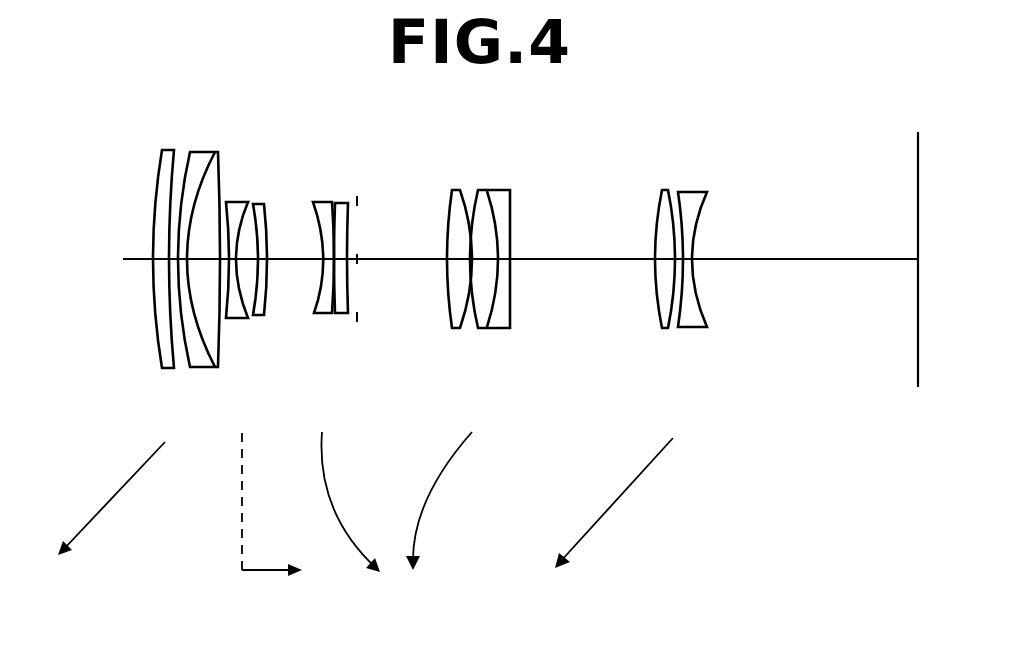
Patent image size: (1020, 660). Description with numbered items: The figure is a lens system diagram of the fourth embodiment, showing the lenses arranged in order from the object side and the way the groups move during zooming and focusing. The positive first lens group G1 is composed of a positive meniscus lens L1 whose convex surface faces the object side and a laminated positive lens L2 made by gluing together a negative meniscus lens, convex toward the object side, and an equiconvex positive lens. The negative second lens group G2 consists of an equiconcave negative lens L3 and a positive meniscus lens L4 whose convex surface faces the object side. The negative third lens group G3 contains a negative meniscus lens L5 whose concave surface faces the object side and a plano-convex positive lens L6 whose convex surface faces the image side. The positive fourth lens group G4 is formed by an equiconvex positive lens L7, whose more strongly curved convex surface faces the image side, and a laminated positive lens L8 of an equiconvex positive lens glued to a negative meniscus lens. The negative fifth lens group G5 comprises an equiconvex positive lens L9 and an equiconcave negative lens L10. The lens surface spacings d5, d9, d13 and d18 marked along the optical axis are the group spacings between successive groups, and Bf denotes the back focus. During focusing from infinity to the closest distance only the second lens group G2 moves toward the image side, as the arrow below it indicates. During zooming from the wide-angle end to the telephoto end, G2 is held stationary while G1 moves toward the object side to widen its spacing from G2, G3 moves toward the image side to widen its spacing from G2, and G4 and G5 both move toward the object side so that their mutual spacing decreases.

The positive meniscus lens L1 is at (170, 148).
The laminated positive lens L2 is at (217, 152).
The equiconcave negative lens L3 is at (238, 203).
The positive meniscus lens L4 is at (265, 205).
The negative meniscus lens L5 is at (322, 207).
The plano-convex positive lens L6 is at (345, 205).
The equiconvex positive lens L7 is at (457, 190).
The laminated positive lens L8 is at (500, 197).
The equiconvex positive lens L9 is at (663, 190).
The equiconcave negative lens L10 is at (690, 193).
The first lens group G1 is at (139, 322).
The second lens group G2 is at (273, 348).
The third lens group G3 is at (343, 330).
The fourth lens group G4 is at (461, 329).
The fifth lens group G5 is at (644, 328).
The lens surface spacing d5 is at (222, 264).
The lens surface spacing d9 is at (290, 262).
The lens surface spacing d13 is at (413, 262).
The lens surface spacing d18 is at (605, 262).
The back focus Bf is at (787, 262).